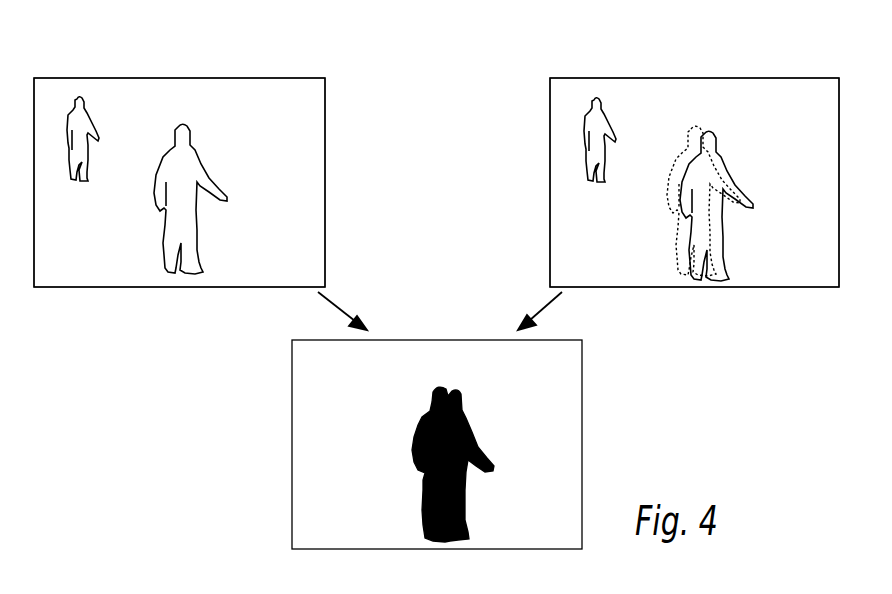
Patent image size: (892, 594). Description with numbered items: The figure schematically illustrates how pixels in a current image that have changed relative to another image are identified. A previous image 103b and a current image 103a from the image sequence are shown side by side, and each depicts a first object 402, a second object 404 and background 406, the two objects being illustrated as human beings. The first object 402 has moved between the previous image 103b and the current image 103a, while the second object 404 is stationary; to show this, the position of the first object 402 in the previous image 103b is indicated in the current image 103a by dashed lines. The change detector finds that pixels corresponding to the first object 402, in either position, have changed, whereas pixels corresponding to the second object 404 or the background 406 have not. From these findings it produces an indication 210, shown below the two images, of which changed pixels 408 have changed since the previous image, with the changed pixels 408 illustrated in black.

The current image 103a is at (637, 78).
The previous image 103b is at (182, 78).
The indication 210 is at (292, 442).
The first object 402 is at (163, 157).
The second object 404 is at (90, 146).
The background 406 is at (270, 100).
The changed pixels 408 is at (415, 432).